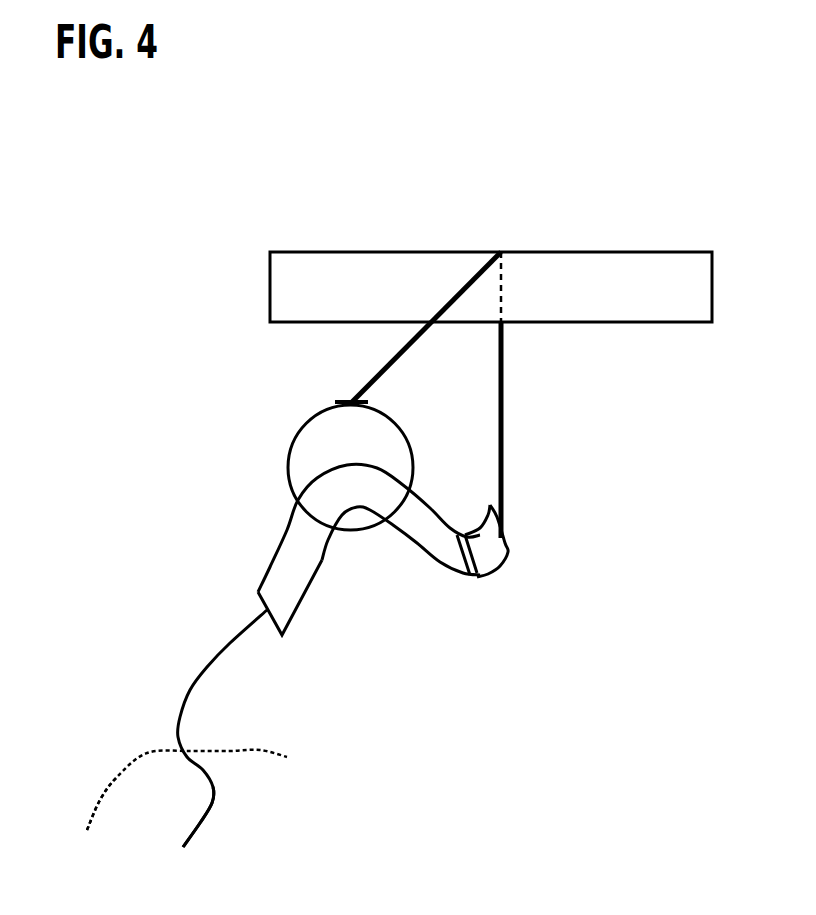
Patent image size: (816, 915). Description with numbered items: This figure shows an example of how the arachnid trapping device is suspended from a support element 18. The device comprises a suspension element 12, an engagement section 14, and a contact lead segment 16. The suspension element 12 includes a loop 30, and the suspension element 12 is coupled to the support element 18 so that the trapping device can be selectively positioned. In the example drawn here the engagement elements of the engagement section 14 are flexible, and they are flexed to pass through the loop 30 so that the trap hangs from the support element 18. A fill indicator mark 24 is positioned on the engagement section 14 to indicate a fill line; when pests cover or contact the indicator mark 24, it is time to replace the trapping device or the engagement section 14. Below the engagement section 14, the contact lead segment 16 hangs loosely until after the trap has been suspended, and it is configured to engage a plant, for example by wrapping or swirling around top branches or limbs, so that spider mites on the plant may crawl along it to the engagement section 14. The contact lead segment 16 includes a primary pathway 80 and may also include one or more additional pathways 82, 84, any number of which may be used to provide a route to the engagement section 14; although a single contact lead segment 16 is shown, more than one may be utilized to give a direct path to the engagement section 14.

The support element 18 is at (289, 251).
The suspension element 12 is at (349, 397).
The loop 30 is at (305, 422).
The engagement section 14 is at (303, 610).
The fill indicator mark 24 is at (470, 577).
The contact lead segment 16 is at (185, 689).
The primary pathway 80 is at (213, 798).
The additional pathway 82 is at (263, 750).
The additional pathway 84 is at (118, 773).